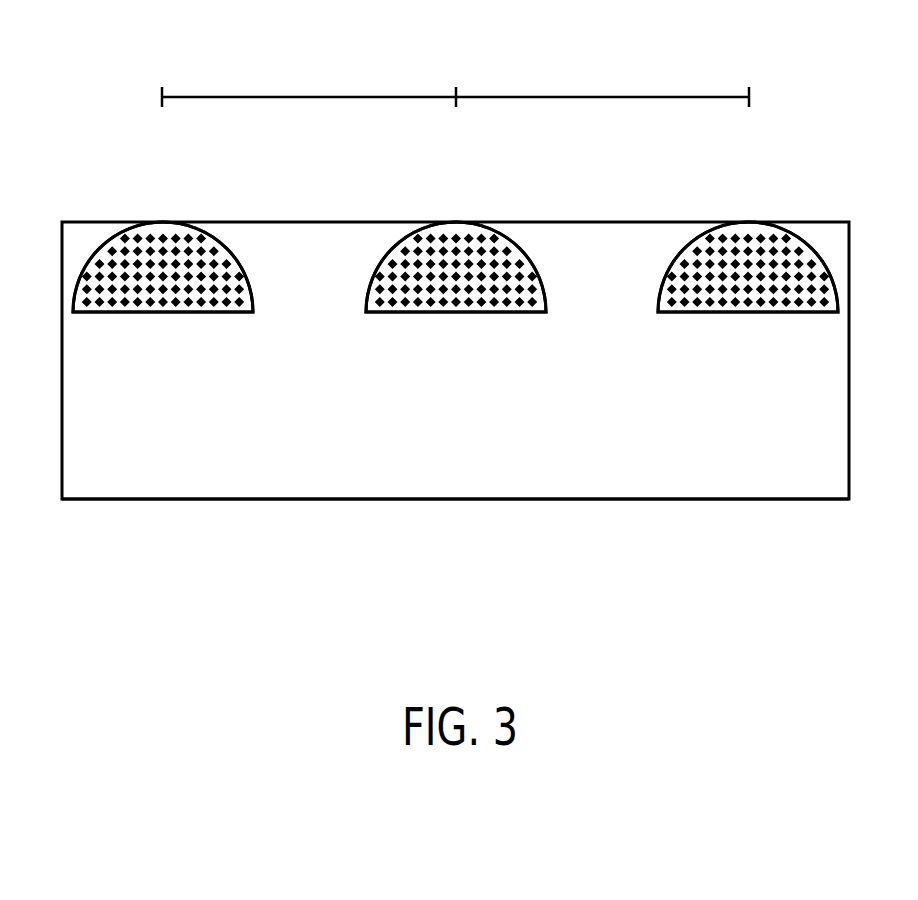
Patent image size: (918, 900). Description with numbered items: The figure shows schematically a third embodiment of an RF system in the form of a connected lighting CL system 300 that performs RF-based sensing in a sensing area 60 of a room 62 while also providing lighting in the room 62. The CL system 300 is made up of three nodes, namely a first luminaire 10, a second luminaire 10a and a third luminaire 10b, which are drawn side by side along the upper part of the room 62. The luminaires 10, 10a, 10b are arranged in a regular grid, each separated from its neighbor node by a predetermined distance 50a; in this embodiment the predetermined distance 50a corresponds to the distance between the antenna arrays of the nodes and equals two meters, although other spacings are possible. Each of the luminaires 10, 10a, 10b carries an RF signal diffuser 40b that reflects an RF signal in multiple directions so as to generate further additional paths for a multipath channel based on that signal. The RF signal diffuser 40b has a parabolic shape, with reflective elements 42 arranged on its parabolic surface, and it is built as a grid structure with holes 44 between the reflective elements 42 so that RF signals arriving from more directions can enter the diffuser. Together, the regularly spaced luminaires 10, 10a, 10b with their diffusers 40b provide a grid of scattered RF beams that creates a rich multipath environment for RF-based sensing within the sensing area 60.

The CL system 300 is at (446, 410).
The sensing area 60 is at (102, 486).
The room 62 is at (113, 500).
The predetermined distance 50a is at (315, 97).
The RF signal diffuser 40b is at (455, 265).
The reflective elements 42 is at (121, 228).
The holes 44 is at (148, 228).
The first luminaire 10 is at (156, 334).
The second luminaire 10a is at (447, 335).
The third luminaire 10b is at (751, 334).